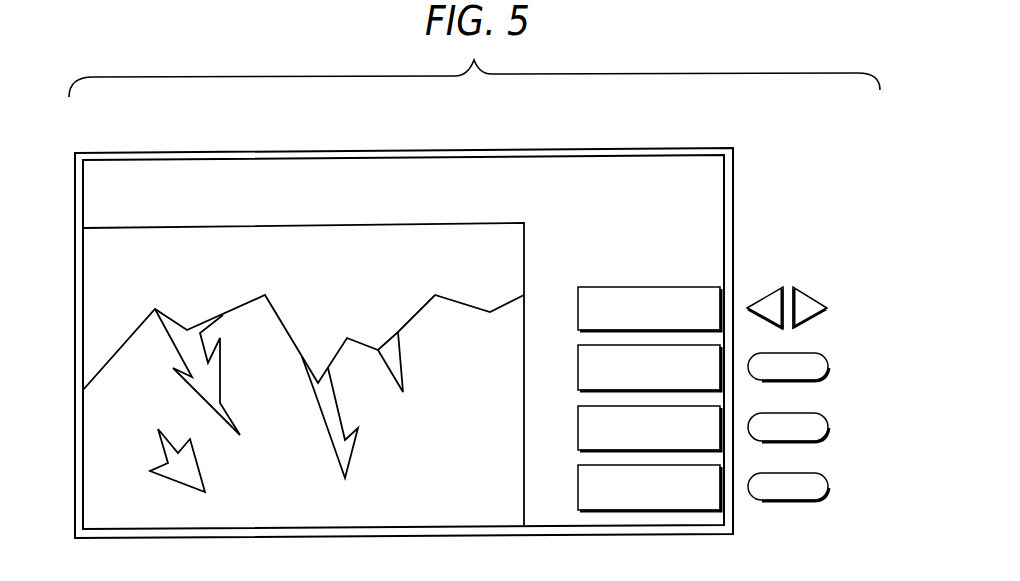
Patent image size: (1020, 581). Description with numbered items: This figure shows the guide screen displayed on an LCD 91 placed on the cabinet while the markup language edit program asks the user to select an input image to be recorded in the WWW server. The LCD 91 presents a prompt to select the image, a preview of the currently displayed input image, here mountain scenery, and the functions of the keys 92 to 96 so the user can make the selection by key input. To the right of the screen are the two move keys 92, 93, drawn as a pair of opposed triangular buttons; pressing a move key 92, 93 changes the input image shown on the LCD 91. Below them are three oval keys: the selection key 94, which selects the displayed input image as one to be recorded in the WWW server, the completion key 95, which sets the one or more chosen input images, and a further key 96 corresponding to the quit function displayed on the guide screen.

The LCD 91 is at (400, 152).
The move key 92 is at (773, 291).
The move key 93 is at (808, 295).
The selection key 94 is at (829, 367).
The completion key 95 is at (829, 427).
The quit key 96 is at (829, 487).